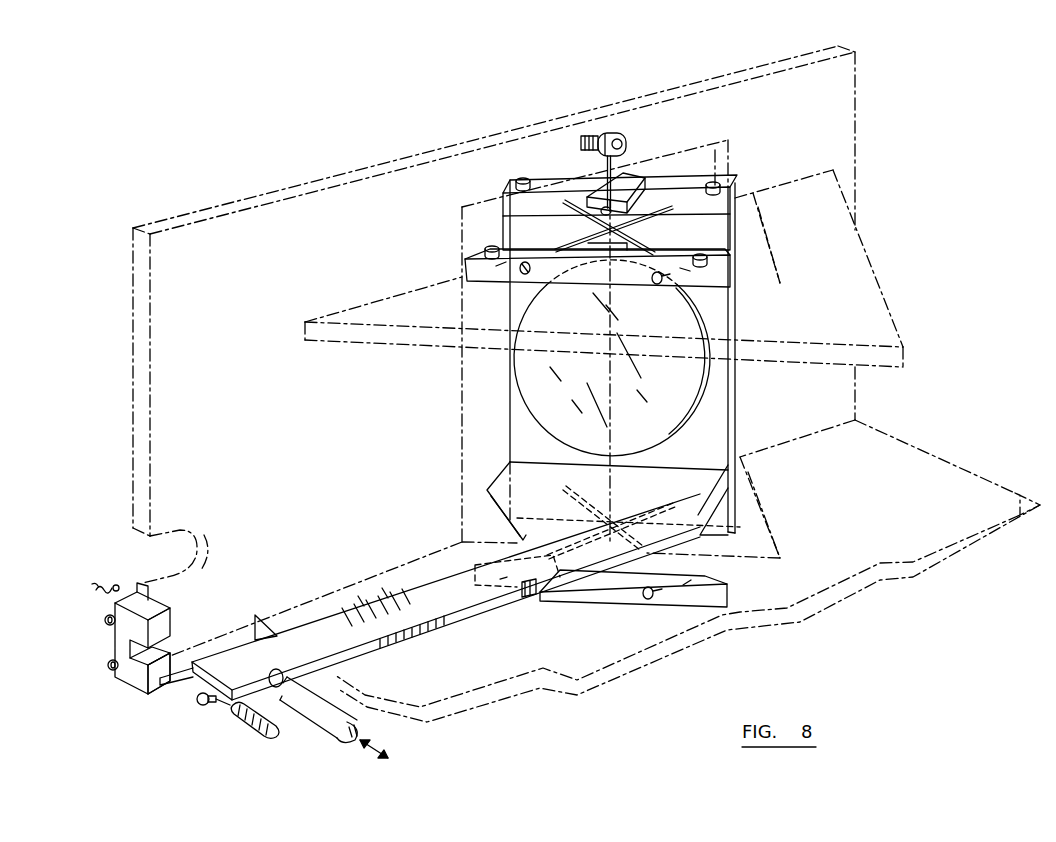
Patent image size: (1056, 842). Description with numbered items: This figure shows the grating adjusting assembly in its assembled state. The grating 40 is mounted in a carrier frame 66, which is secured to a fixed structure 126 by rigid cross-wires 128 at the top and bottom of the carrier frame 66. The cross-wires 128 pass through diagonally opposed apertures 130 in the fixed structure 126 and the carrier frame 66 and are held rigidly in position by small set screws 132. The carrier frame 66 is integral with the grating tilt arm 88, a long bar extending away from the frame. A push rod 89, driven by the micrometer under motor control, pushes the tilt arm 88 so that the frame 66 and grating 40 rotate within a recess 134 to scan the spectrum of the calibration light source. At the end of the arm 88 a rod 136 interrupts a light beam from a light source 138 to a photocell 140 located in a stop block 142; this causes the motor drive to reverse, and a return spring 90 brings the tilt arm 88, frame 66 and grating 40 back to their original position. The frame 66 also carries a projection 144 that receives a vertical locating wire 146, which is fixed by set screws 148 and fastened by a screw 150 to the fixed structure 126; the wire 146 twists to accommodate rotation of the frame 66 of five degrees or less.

The fixed structure 126 is at (843, 123).
The recess 134 is at (703, 145).
The carrier frame 66 is at (733, 430).
The grating 40 is at (713, 382).
The set screws 132 is at (556, 205).
The apertures 130 is at (497, 270).
The cross-wires 128 is at (570, 230).
The vertical locating wire 146 is at (672, 207).
The projection 144 is at (632, 176).
The set screws 148 is at (624, 152).
The screw 150 is at (611, 132).
The grating tilt arm 88 is at (374, 602).
The push rod 89 is at (330, 727).
The return spring 90 is at (248, 730).
The rod 136 is at (178, 705).
The light source 138 is at (170, 640).
The photocell 140 is at (150, 670).
The stop block 142 is at (112, 632).